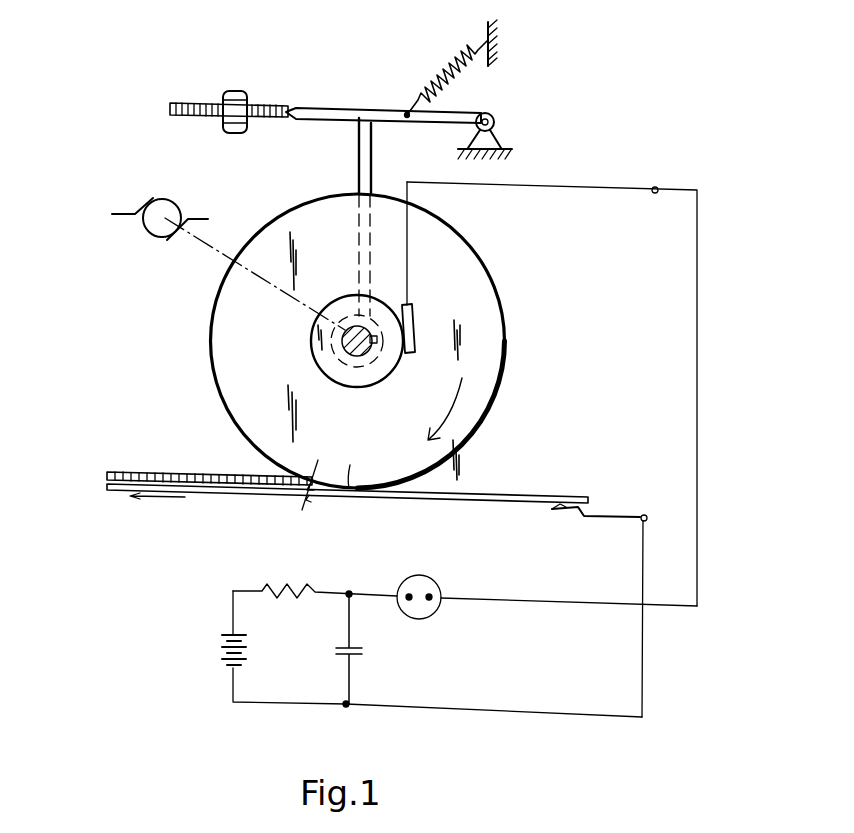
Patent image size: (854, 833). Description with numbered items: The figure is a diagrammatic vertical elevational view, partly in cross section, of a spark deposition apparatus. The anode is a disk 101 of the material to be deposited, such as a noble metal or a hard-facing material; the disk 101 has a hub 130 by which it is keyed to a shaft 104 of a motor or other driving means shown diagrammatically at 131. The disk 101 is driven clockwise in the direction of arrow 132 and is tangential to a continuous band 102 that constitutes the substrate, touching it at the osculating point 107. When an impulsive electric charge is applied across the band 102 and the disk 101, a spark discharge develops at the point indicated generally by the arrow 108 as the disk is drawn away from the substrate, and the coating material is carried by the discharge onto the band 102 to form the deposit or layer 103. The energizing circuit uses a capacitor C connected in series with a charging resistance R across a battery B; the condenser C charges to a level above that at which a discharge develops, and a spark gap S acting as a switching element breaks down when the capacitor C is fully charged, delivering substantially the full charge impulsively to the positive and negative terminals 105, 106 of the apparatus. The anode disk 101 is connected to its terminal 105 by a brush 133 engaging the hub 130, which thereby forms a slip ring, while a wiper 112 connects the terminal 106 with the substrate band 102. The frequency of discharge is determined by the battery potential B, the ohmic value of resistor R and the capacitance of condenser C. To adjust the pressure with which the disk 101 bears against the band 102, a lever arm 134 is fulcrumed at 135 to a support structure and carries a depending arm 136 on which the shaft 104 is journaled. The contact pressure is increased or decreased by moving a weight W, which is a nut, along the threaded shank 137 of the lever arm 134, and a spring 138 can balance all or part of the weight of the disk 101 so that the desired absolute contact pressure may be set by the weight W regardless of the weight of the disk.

The disk 101 is at (485, 260).
The continuous band 102 is at (478, 502).
The layer 103 is at (170, 474).
The shaft 104 is at (344, 348).
The positive terminal 105 is at (655, 194).
The negative terminal 106 is at (648, 523).
The osculating point 107 is at (359, 466).
The discharge point 108 is at (325, 470).
The wiper 112 is at (613, 512).
The hub 130 is at (395, 367).
The motor or driving means 131 is at (143, 222).
The arrow 132 is at (480, 426).
The brush 133 is at (414, 312).
The lever arm 134 is at (326, 108).
The fulcrum 135 is at (496, 121).
The depending arm 136 is at (374, 148).
The threaded shank 137 is at (190, 116).
The spring 138 is at (462, 58).
The weight W is at (233, 89).
The charging resistance R is at (282, 590).
The spark gap S is at (436, 582).
The battery B is at (222, 637).
The capacitor C is at (363, 653).